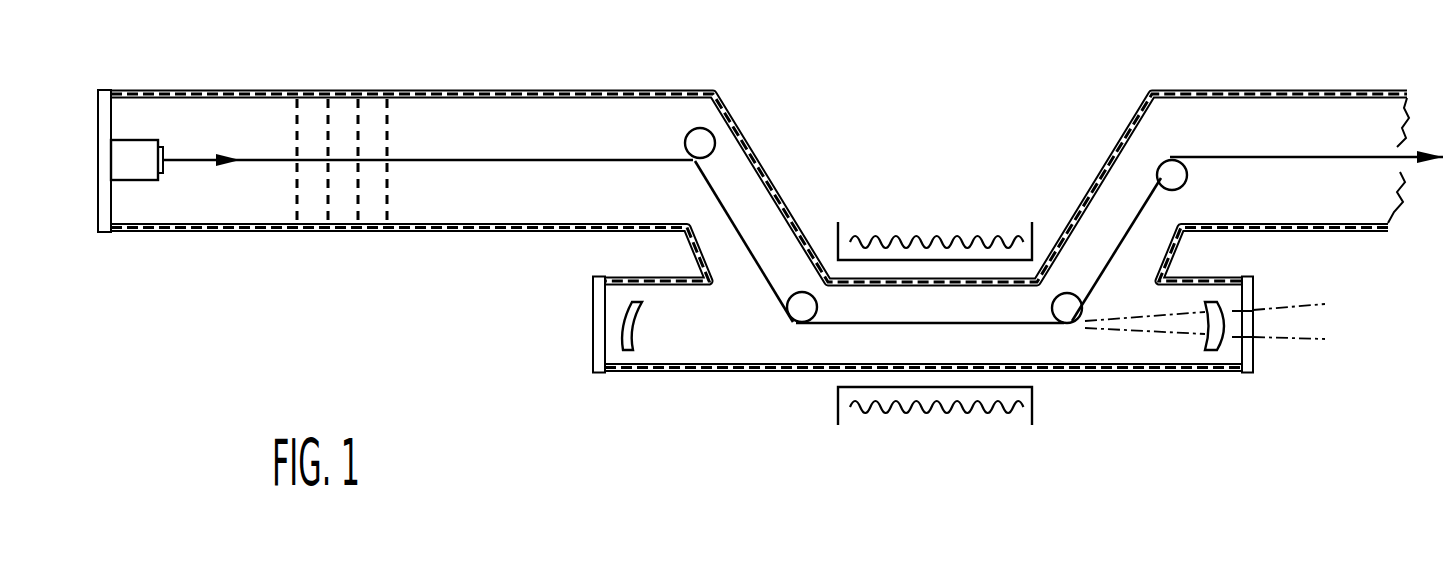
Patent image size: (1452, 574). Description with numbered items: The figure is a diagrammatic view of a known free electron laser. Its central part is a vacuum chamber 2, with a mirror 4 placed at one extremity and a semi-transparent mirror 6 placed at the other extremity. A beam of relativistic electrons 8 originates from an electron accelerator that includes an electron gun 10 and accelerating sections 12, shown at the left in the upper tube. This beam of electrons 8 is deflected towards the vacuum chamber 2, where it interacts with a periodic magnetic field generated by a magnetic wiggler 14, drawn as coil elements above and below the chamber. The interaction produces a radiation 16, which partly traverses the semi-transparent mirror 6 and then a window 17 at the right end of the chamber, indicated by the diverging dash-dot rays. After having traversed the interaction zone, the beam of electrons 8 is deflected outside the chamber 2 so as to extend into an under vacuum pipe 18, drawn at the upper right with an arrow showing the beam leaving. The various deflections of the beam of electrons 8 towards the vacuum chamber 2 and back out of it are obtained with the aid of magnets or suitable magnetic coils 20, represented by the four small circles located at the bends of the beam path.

The vacuum chamber 2 is at (738, 372).
The mirror 4 is at (635, 350).
The semi-transparent mirror 6 is at (1213, 350).
The beam of relativistic electrons 8 is at (455, 155).
The electron gun 10 is at (135, 158).
The accelerating sections 12 is at (297, 140).
The magnetic wiggler 14 is at (963, 236).
The radiation 16 is at (1160, 330).
The window 17 is at (1250, 350).
The under vacuum pipe 18 is at (1368, 90).
The magnets or magnetic coils 20 is at (707, 145).